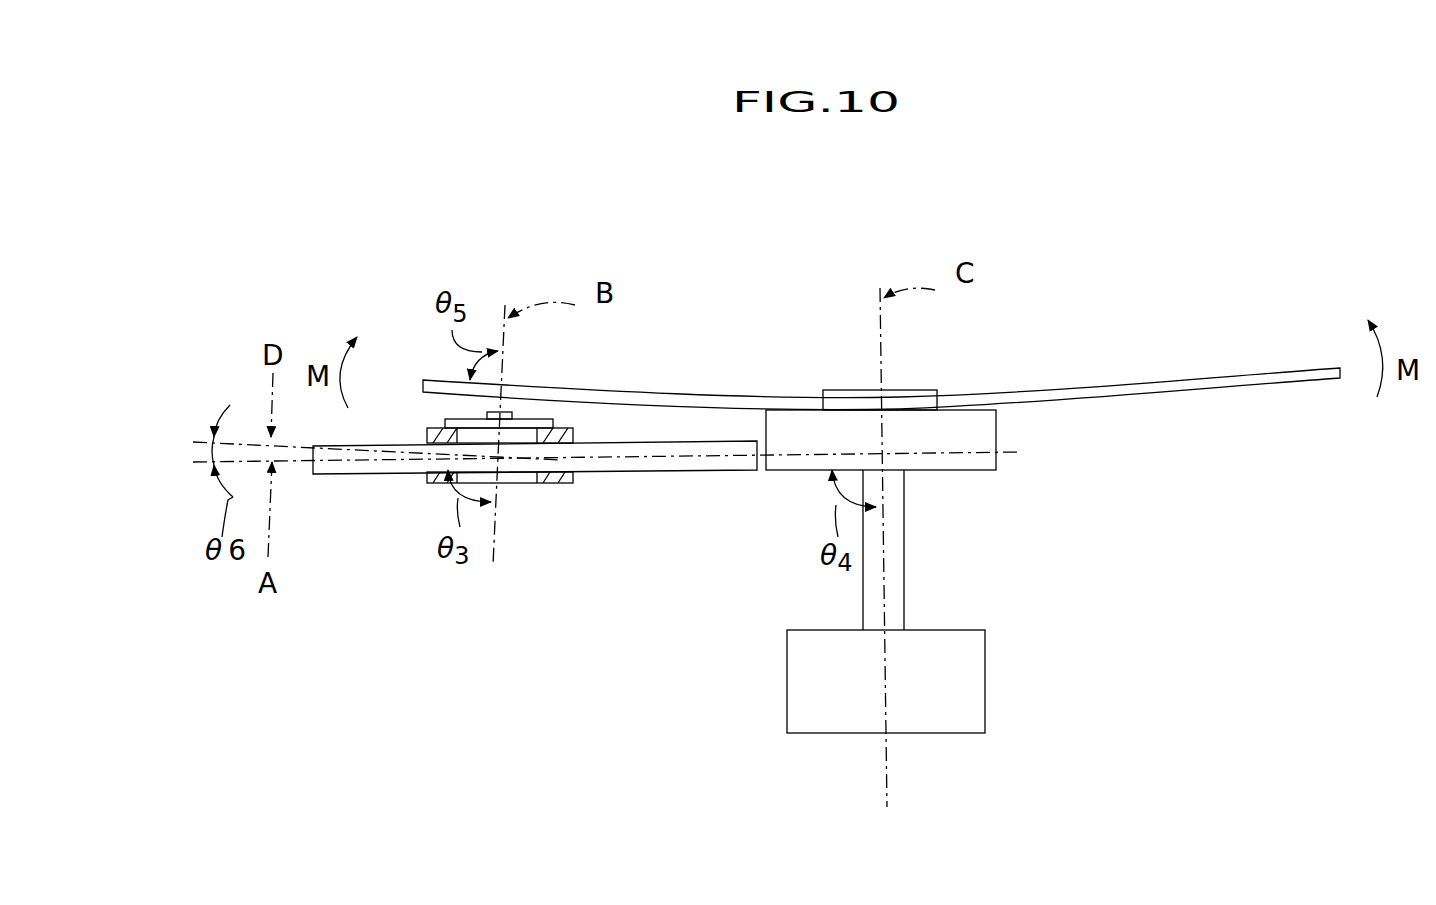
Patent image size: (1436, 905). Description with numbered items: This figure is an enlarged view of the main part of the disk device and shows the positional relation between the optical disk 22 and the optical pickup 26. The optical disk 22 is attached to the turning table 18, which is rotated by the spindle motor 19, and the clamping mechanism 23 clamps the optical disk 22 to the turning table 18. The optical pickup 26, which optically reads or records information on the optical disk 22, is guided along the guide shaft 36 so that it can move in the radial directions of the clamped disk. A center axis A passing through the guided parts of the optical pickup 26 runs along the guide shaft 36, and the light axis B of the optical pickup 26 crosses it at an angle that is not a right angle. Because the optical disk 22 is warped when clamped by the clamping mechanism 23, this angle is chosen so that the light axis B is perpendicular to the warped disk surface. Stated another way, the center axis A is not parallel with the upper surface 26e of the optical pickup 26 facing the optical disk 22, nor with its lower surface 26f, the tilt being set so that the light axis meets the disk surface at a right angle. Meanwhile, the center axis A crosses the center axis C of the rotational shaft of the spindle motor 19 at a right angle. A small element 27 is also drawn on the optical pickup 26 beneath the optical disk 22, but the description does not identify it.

The turning table 18 is at (792, 470).
The spindle motor 19 is at (978, 660).
The optical disk 22 is at (1212, 376).
The clamping mechanism 23 is at (898, 389).
The optical pickup 26 is at (432, 482).
The upper surface 26e is at (553, 422).
The lower surface 26f is at (553, 484).
The spacer 27 is at (508, 412).
The guide shaft 36 is at (693, 472).